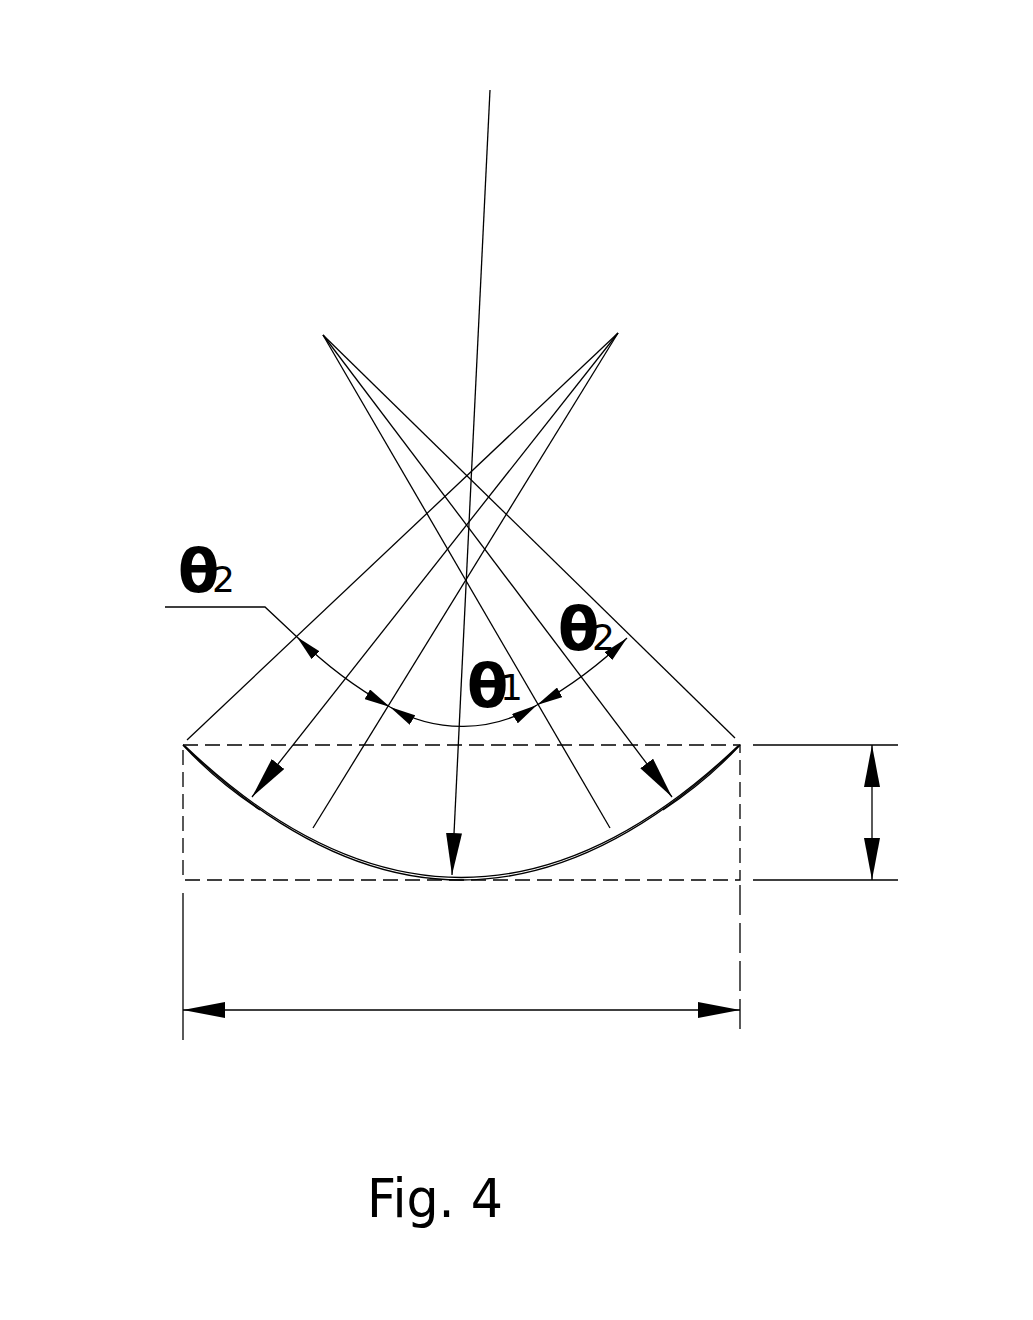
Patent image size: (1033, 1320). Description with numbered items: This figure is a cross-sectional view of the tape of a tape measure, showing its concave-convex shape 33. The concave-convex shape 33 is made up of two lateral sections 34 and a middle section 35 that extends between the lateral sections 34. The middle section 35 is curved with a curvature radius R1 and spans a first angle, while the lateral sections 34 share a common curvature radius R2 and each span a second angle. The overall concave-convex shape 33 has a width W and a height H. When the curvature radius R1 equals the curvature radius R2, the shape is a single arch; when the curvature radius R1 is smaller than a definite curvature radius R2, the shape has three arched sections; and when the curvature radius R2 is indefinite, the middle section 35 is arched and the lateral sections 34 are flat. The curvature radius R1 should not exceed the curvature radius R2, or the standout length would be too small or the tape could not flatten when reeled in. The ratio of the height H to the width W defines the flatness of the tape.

The concave-convex shape 33 is at (133, 897).
The lateral sections 34 is at (237, 798).
The middle section 35 is at (533, 872).
The curvature radius of the middle section R1 is at (490, 90).
The curvature radius of the lateral sections R2 is at (323, 335).
The height H is at (825, 812).
The width W is at (461, 973).